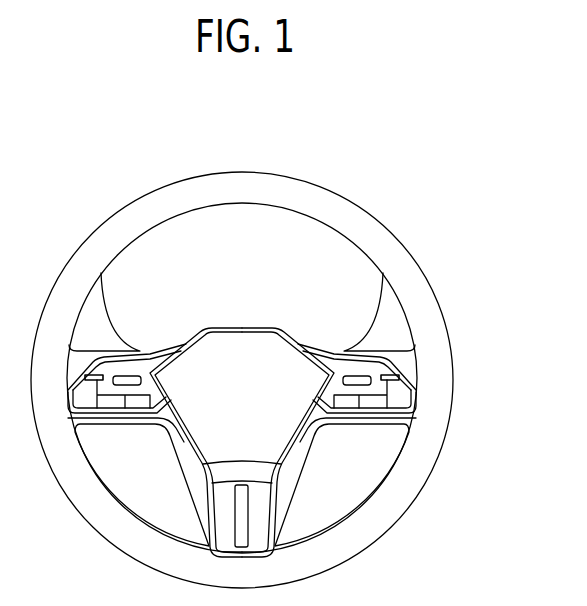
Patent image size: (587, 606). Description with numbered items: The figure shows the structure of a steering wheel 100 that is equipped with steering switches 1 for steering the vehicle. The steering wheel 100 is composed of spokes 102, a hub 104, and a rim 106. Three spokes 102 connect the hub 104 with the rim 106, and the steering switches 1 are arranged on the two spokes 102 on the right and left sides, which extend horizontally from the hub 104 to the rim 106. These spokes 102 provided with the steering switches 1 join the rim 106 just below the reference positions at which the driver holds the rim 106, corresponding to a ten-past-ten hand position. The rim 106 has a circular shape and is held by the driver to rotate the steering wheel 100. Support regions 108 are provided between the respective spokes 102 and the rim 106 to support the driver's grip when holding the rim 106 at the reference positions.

The steering wheel 100 is at (409, 190).
The spokes 102 is at (406, 379).
The hub 104 is at (243, 363).
The rim 106 is at (257, 183).
The support regions 108 is at (398, 328).
The steering switches 1 is at (128, 375).